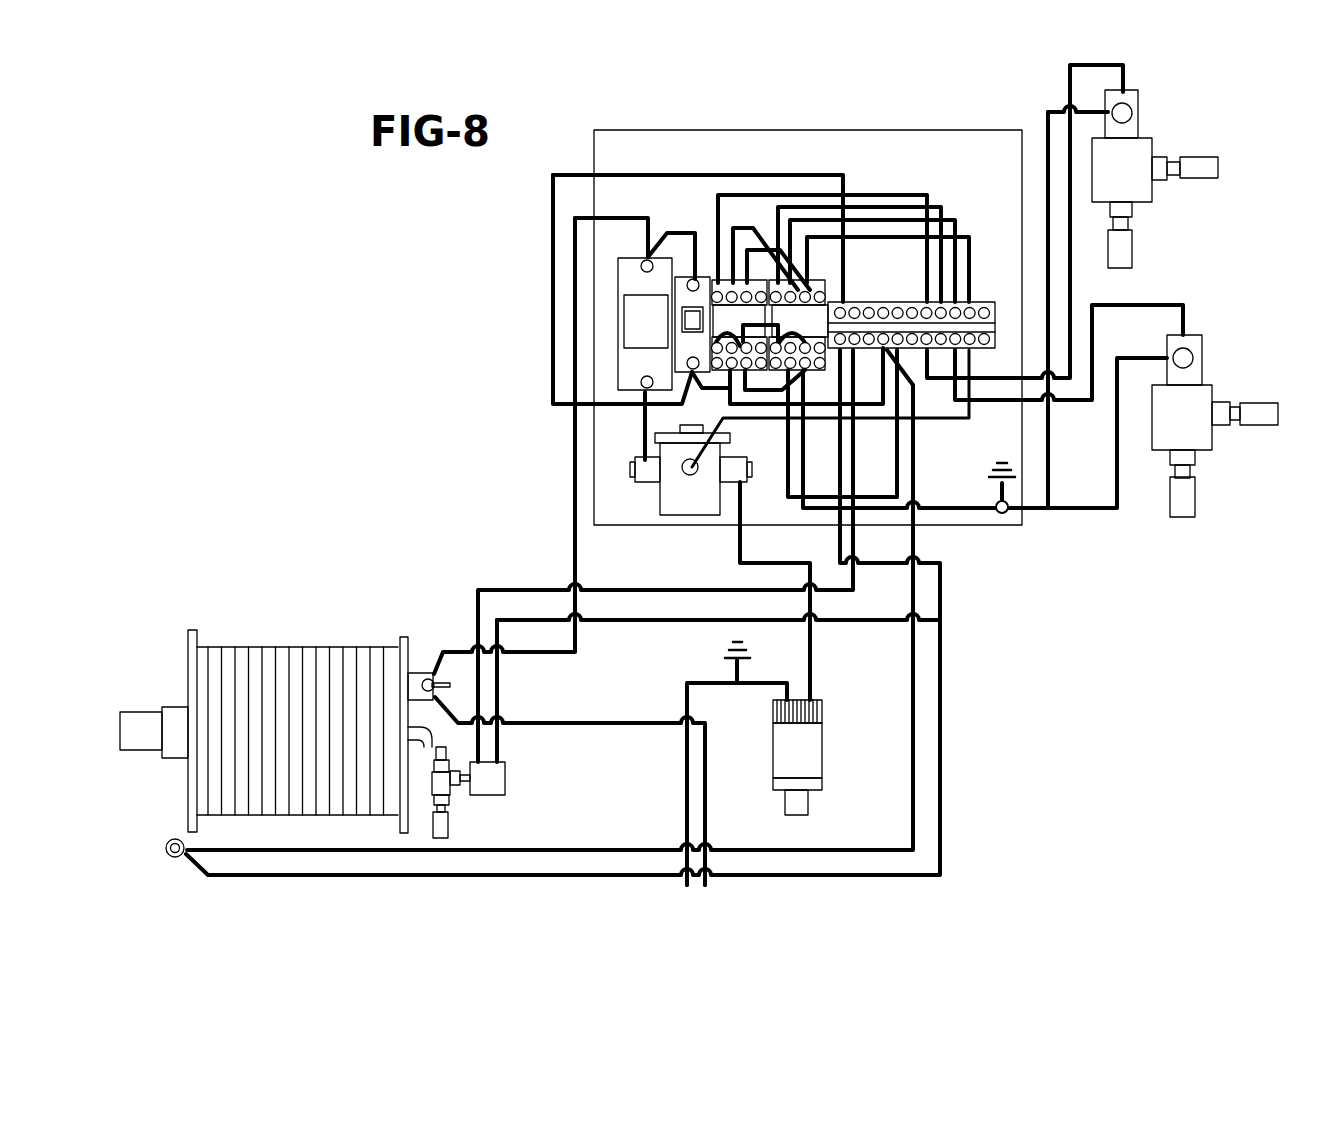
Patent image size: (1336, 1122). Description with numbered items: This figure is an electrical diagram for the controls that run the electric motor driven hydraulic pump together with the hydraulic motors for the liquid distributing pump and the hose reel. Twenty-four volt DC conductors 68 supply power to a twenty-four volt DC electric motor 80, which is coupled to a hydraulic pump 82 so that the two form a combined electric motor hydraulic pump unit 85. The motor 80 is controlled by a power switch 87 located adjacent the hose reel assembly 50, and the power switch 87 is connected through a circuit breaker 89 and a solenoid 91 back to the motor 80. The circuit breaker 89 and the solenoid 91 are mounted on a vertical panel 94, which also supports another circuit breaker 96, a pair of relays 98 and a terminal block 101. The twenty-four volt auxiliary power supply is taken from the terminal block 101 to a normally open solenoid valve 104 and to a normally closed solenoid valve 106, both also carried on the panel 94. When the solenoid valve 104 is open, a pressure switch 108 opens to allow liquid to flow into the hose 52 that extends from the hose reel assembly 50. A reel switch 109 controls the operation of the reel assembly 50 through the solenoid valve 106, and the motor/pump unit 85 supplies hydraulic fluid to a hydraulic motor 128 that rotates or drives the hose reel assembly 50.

The hose reel assembly 50 is at (264, 694).
The hose 52 is at (268, 787).
The 24 volt DC conductors 68 is at (708, 818).
The 24 volt DC electric motor 80 is at (810, 755).
The hydraulic pump 82 is at (807, 808).
The combined unit 85 is at (768, 752).
The power switch 87 is at (423, 673).
The circuit breaker 89 is at (618, 272).
The solenoid 91 is at (667, 495).
The vertical panel 94 is at (597, 140).
The circuit breaker 96 is at (680, 338).
The relays 98 is at (725, 280).
The terminal block 101 is at (983, 302).
The normally open solenoid valve 104 is at (1210, 437).
The normally closed solenoid valve 106 is at (1147, 193).
The pressure switch 108 is at (497, 793).
The reel switch 109 is at (172, 837).
The hydraulic motor 128 is at (143, 717).